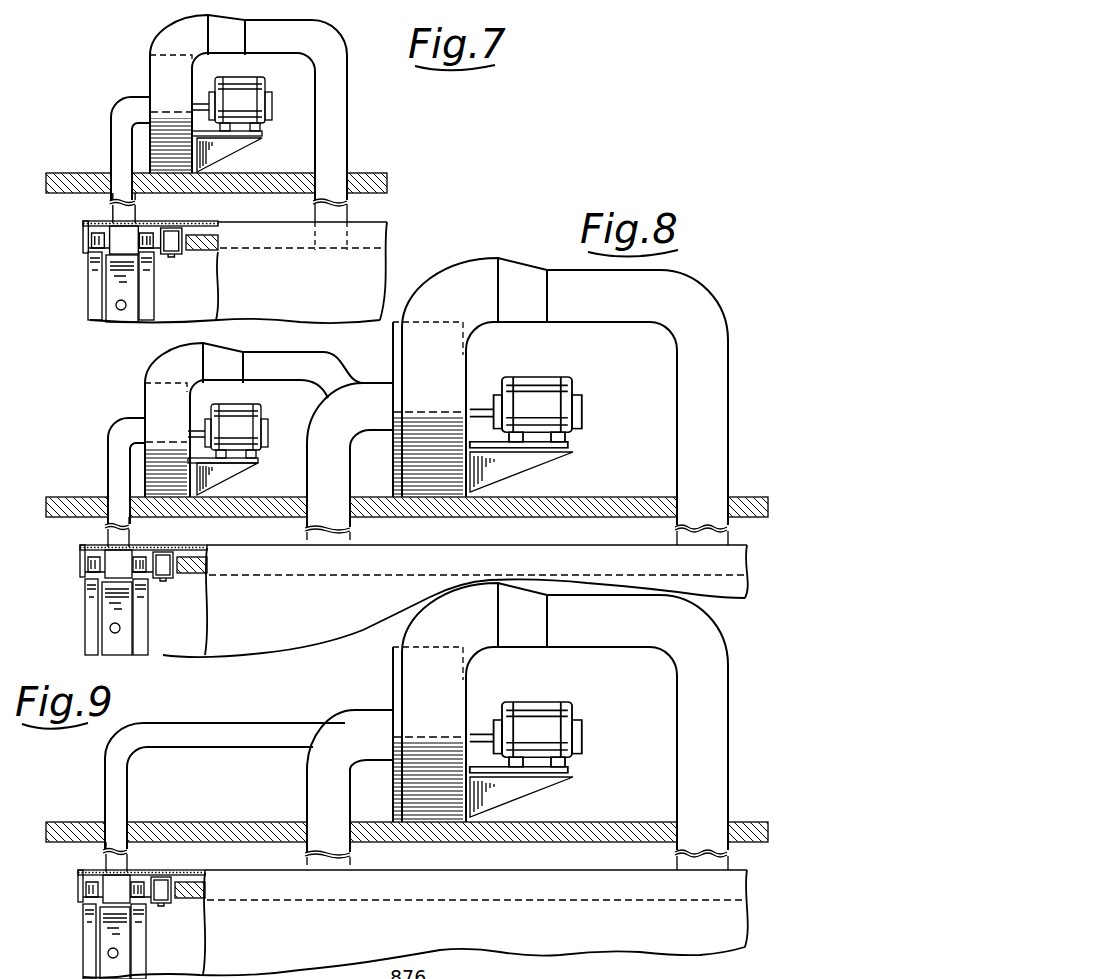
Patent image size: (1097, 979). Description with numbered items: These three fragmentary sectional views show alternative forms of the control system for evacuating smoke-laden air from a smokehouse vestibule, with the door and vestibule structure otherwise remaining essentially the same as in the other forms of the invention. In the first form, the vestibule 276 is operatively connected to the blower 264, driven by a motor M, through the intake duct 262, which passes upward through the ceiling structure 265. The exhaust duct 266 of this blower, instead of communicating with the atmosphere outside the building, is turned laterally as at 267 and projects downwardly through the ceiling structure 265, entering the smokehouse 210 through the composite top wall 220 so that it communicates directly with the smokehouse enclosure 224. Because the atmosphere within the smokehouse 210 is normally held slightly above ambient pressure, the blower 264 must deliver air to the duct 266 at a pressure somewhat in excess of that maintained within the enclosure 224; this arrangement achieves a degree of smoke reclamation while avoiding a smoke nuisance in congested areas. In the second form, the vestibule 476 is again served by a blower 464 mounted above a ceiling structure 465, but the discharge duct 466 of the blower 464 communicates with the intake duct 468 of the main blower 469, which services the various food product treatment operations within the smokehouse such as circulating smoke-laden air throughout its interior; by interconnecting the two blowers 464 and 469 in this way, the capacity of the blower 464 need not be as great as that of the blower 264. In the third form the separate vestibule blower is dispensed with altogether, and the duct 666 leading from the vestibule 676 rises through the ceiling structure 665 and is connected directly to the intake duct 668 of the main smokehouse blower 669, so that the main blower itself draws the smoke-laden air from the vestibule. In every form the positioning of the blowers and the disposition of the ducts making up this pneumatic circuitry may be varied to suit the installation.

In FIG. 7, the smokehouse 210 is at (400, 240).
In FIG. 7, the composite top wall 220 is at (380, 216).
In FIG. 7, the smokehouse enclosure 224 is at (205, 253).
In FIG. 7, the intake duct 262 is at (115, 152).
In FIG. 7, the blower 264 is at (165, 98).
In FIG. 7, the ceiling structure 265 is at (366, 173).
In FIG. 7, the exhaust duct 266 is at (340, 100).
In FIG. 7, the lateral turn 267 is at (330, 42).
In FIG. 7, the vestibule 276 is at (112, 283).
In FIG. 7, the motor M is at (270, 82).
In FIG. 8, the motor M is at (266, 404).
In FIG. 8, the blower 464 is at (162, 433).
In FIG. 8, the platform 465 is at (563, 497).
In FIG. 8, the discharge duct 466 is at (287, 358).
In FIG. 8, the intake duct 468 is at (317, 458).
In FIG. 8, the main blower 469 is at (450, 453).
In FIG. 8, the vestibule 476 is at (108, 612).
In FIG. 9, the platform 665 is at (563, 822).
In FIG. 9, the duct 666 is at (247, 728).
In FIG. 9, the intake duct 668 is at (318, 785).
In FIG. 9, the main smokehouse blower 669 is at (450, 778).
In FIG. 9, the vestibule 676 is at (110, 933).